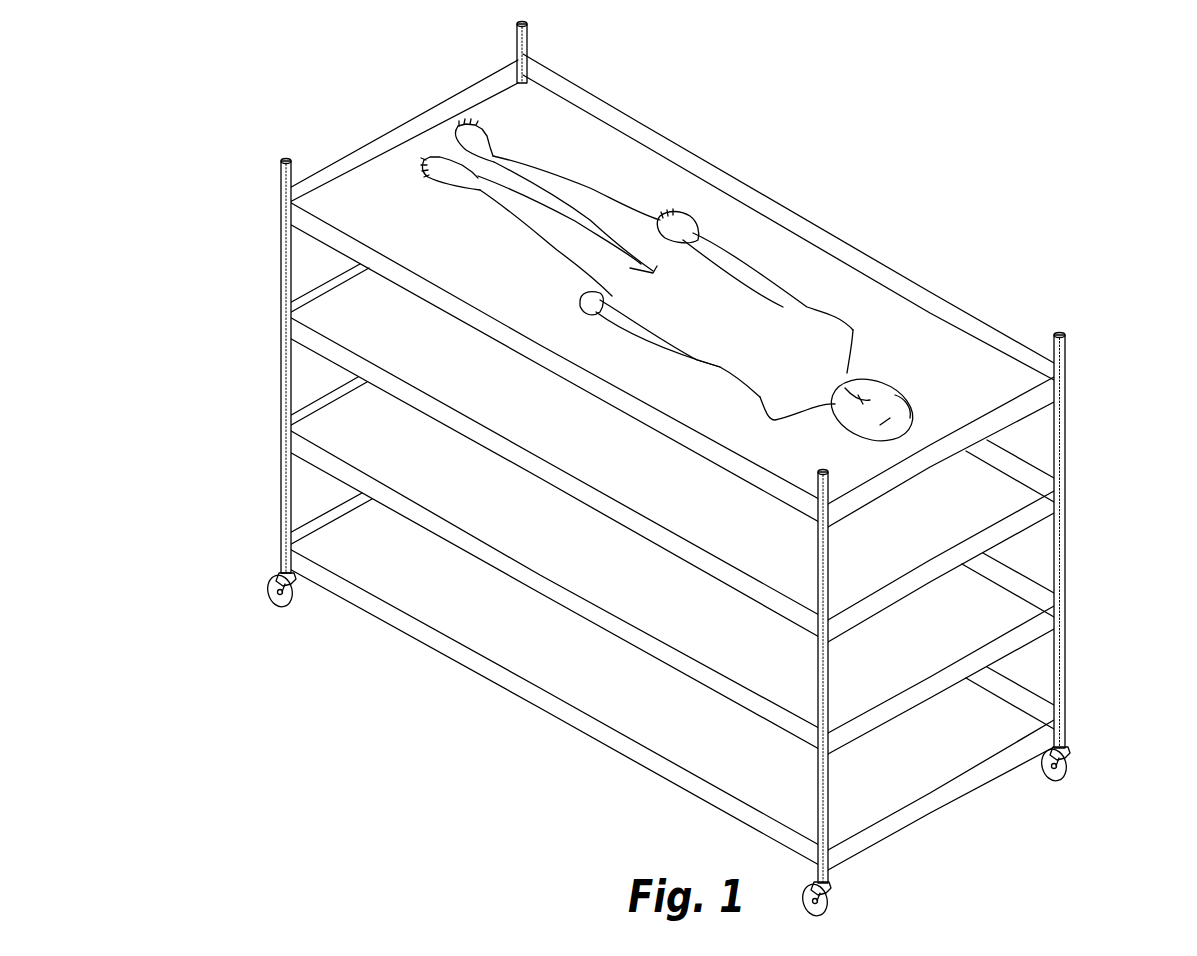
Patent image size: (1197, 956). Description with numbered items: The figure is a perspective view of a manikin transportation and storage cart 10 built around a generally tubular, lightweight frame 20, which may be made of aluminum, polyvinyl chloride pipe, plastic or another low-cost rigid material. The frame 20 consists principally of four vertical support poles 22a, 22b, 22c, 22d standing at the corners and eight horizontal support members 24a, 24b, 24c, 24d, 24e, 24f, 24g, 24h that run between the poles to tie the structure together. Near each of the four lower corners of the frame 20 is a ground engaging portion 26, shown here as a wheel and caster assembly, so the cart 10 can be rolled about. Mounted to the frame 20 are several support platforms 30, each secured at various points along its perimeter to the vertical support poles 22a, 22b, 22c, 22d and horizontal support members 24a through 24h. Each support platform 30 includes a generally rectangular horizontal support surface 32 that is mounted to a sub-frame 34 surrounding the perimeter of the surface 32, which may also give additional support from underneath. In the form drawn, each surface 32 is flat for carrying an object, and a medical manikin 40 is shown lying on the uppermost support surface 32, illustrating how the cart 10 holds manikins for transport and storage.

The manikin transportation and storage cart 10 is at (1068, 132).
The frame 20 is at (387, 112).
The vertical support pole 22a is at (280, 178).
The vertical support pole 22b is at (815, 777).
The vertical support pole 22c is at (1068, 343).
The vertical support pole 22d is at (530, 41).
The horizontal support member 24a is at (385, 628).
The horizontal support member 24b is at (953, 800).
The horizontal support member 24c is at (1020, 680).
The horizontal support member 24d is at (320, 512).
The horizontal support member 24e is at (328, 232).
The horizontal support member 24f is at (1003, 398).
The horizontal support member 24g is at (735, 182).
The horizontal support member 24h is at (428, 106).
The ground engaging portion 26 is at (264, 592).
The support platform 30 is at (310, 362).
The horizontal support surface 32 is at (531, 293).
The sub-frame 34 is at (808, 222).
The medical manikin 40 is at (813, 352).